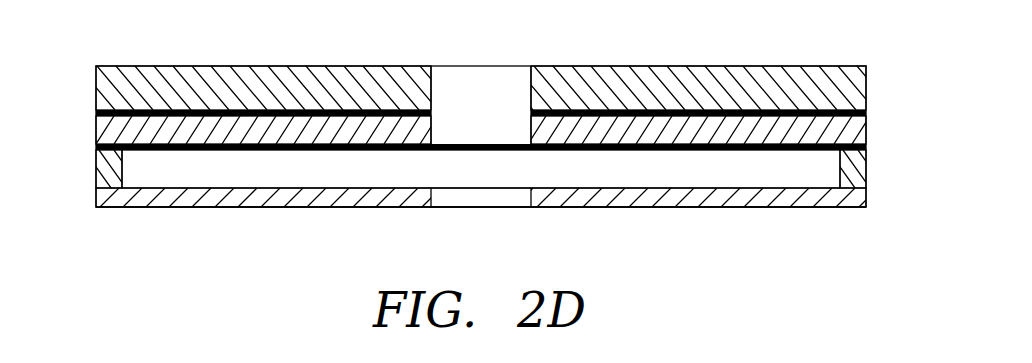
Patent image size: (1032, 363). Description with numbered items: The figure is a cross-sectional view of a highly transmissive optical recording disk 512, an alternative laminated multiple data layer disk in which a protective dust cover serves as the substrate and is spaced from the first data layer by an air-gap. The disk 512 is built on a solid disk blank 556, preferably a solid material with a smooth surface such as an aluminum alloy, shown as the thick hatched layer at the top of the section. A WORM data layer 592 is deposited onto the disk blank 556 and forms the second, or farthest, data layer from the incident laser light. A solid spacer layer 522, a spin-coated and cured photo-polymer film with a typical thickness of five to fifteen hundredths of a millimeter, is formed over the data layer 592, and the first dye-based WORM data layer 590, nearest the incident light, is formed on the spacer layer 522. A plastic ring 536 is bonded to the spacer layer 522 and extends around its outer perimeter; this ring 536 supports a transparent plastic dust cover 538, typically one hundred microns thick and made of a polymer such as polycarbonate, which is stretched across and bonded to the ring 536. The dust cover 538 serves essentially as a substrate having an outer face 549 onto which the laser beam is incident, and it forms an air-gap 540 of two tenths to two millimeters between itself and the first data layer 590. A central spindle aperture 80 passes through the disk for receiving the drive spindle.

The highly transmissive optical recording disk 512 is at (198, 227).
The solid disk blank 556 is at (107, 88).
The WORM data layer 592 is at (834, 110).
The solid spacer layer 522 is at (648, 125).
The spindle aperture 80 is at (494, 87).
The plastic ring 536 is at (107, 168).
The first dye-based WORM data layer 590 is at (826, 148).
The air-gap 540 is at (745, 165).
The transparent plastic dust cover 538 is at (640, 196).
The outer face 549 is at (268, 207).